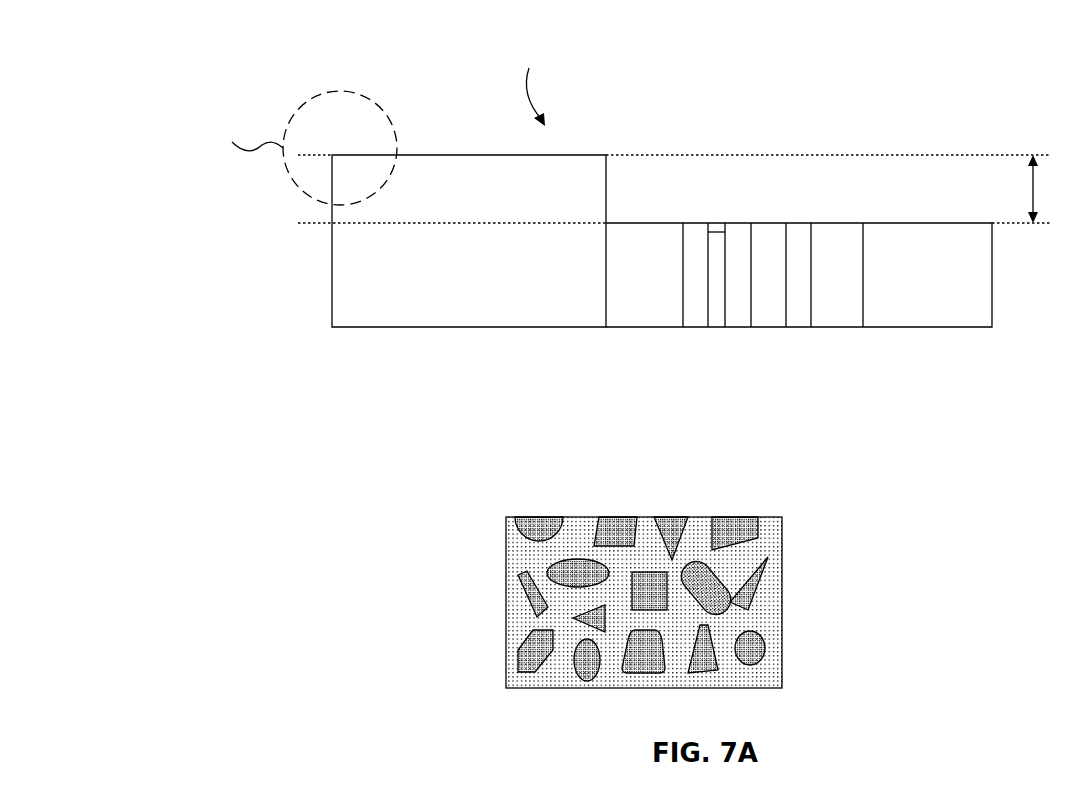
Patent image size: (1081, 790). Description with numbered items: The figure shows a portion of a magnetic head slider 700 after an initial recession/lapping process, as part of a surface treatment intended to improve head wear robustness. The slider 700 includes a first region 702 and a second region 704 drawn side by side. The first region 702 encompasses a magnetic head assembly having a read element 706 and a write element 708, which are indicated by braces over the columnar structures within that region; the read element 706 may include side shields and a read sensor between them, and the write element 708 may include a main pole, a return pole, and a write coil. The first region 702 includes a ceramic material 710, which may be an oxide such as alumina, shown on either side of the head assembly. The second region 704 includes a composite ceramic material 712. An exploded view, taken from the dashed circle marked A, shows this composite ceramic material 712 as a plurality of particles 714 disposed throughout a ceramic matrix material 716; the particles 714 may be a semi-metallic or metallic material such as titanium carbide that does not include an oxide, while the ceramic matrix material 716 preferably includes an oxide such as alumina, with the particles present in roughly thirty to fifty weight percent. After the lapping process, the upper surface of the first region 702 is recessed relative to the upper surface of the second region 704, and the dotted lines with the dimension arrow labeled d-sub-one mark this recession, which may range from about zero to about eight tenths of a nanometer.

The slider 700 is at (256, 47).
The first region 702 is at (992, 332).
The second region 704 is at (606, 332).
The read element 706 is at (751, 220).
The write element 708 is at (863, 220).
The ceramic material 710 is at (799, 275).
The composite ceramic material 712 is at (897, 597).
The particles 714 is at (534, 525).
The ceramic matrix material 716 is at (517, 618).